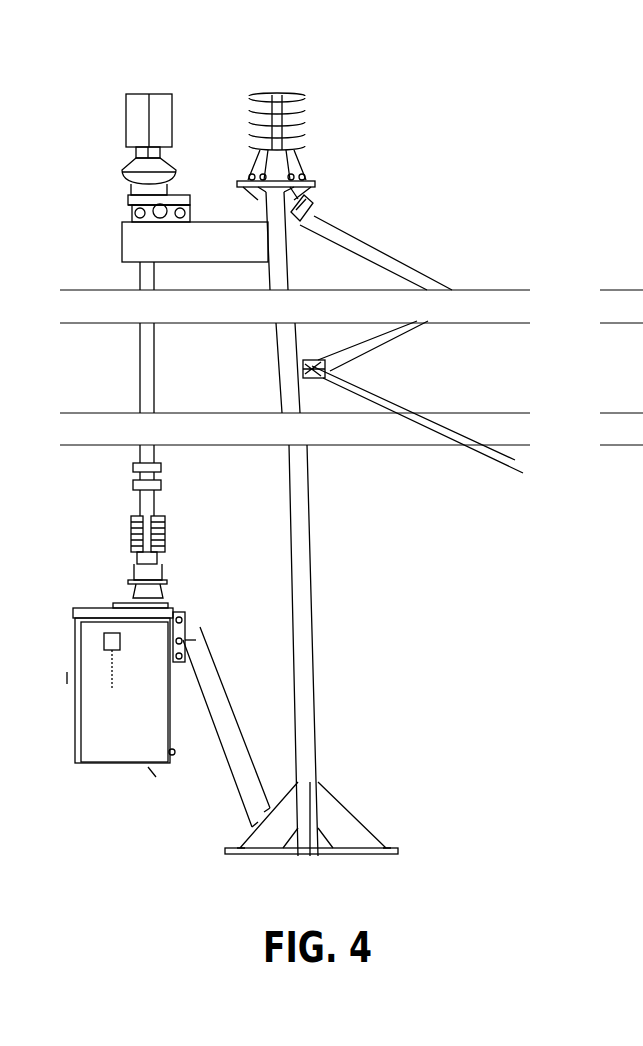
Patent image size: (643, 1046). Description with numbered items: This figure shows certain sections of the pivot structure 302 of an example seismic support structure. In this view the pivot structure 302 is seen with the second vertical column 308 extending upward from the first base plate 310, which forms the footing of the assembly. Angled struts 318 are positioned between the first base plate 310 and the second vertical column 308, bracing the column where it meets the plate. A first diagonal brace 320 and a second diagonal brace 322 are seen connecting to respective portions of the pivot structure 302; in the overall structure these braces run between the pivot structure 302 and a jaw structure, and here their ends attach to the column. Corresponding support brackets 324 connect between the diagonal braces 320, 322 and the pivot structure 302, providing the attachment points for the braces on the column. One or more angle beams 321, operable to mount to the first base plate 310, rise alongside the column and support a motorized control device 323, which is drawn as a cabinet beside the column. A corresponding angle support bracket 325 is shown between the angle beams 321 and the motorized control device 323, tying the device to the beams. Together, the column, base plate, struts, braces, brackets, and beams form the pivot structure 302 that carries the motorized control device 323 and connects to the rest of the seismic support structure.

The pivot structure 302 is at (418, 138).
The second vertical column 308 is at (322, 681).
The first base plate 310 is at (327, 849).
The angled struts 318 is at (285, 770).
The first diagonal brace 320 is at (392, 254).
The angle beams 321 is at (217, 730).
The second diagonal brace 322 is at (360, 347).
The motorized control device 323 is at (152, 765).
The support brackets 324 is at (310, 198).
The angle support bracket 325 is at (190, 618).